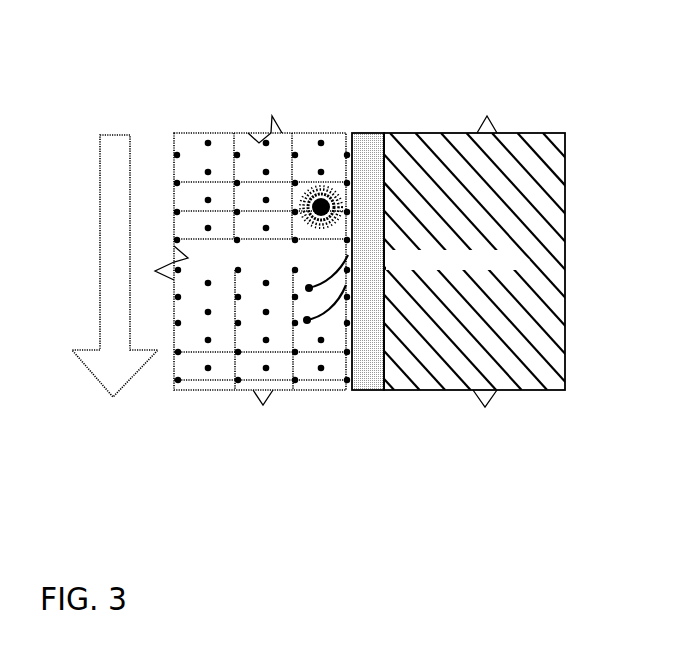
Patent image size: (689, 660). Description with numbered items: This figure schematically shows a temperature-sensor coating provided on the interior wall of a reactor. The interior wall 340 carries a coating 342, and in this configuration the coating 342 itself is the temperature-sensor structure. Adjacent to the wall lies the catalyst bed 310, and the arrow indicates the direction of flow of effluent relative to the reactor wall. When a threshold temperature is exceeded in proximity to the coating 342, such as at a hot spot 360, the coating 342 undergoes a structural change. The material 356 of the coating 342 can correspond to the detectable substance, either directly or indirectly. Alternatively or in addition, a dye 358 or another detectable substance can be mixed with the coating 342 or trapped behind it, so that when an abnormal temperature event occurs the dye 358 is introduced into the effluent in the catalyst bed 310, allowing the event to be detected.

The catalyst bed 310 is at (287, 334).
The interior wall 340 is at (388, 133).
The coating 342 is at (363, 133).
The material 356 is at (319, 257).
The dye 358 is at (331, 317).
The hot spot 360 is at (323, 172).